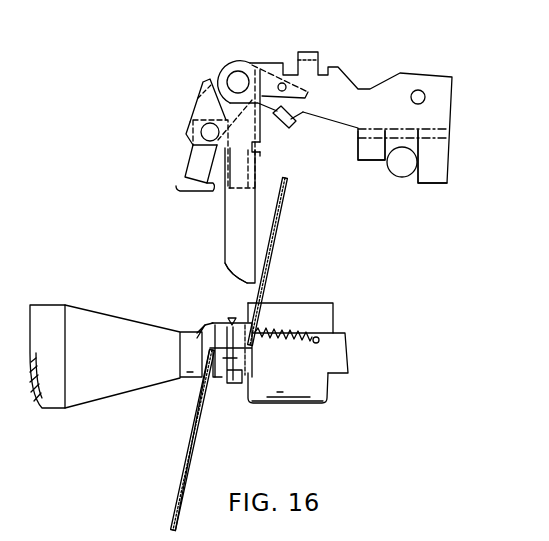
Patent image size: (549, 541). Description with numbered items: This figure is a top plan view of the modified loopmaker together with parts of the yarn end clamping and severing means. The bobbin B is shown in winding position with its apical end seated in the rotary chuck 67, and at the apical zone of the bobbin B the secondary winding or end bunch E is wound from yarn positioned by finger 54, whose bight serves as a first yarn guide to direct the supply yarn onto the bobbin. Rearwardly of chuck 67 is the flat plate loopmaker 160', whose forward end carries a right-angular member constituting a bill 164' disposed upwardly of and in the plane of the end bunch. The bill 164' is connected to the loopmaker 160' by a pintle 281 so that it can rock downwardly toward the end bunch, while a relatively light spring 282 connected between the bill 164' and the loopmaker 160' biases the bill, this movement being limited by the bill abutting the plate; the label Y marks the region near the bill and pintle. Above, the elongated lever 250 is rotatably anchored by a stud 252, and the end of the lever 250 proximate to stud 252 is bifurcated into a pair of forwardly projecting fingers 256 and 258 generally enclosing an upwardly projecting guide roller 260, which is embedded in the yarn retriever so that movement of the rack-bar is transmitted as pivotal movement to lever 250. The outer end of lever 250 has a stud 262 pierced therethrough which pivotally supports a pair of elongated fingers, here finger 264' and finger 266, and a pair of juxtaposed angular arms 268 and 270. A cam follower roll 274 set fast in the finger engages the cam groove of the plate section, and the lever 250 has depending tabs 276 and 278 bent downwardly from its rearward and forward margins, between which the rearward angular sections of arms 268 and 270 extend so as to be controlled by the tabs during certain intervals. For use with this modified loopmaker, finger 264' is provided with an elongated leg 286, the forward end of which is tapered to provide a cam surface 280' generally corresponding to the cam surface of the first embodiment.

The elongated lever 250 is at (447, 95).
The stud 252 is at (418, 90).
The finger 256 is at (428, 177).
The finger 258 is at (365, 160).
The guide roller 260 is at (391, 167).
The stud 262 is at (232, 71).
The finger 264' is at (249, 129).
The finger 266 is at (260, 142).
The angular arm 268 is at (186, 163).
The angular arm 270 is at (207, 190).
The cam follower roll 274 is at (204, 133).
The depending tab 276 is at (313, 53).
The depending tab 278 is at (297, 121).
The cam surface 280' is at (208, 259).
The pintle 281 is at (230, 318).
The spring 282 is at (272, 332).
The elongated leg 286 is at (233, 215).
The finger 54 is at (270, 264).
The loopmaker 160' is at (325, 338).
The bill 164' is at (239, 392).
The rotary chuck 67 is at (318, 387).
The bobbin B is at (100, 388).
The end bunch E is at (207, 382).
The clamp jaw point Y is at (197, 333).